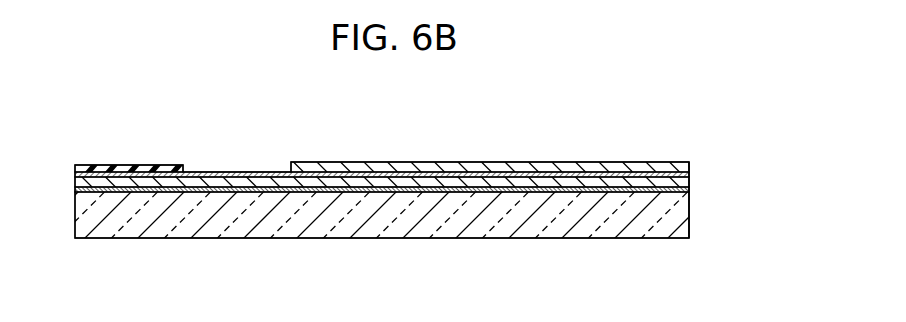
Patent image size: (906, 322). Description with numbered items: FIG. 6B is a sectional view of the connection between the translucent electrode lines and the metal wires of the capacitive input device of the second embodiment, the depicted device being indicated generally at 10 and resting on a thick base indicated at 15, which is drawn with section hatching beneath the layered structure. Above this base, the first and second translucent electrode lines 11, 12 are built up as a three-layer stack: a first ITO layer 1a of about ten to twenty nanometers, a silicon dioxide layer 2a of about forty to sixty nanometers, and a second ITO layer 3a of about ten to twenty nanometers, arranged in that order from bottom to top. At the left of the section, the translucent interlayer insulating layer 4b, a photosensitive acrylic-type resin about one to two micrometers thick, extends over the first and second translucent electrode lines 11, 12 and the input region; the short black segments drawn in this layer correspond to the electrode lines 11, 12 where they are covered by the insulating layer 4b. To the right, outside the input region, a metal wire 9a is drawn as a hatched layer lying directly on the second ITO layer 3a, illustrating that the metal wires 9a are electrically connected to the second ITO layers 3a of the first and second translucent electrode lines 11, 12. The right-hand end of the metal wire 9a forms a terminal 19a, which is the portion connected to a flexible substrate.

The device 10 is at (402, 170).
The substrate 15 is at (678, 214).
The first ITO layer 1a is at (175, 191).
The silicon dioxide layer 2a is at (233, 183).
The second ITO layer 3a is at (275, 177).
The interlayer insulating layer 4b is at (163, 166).
The first translucent electrode line 11 is at (134, 123).
The second translucent electrode line 12 is at (122, 160).
The metal wire 9a is at (434, 163).
The terminal 19a is at (679, 153).